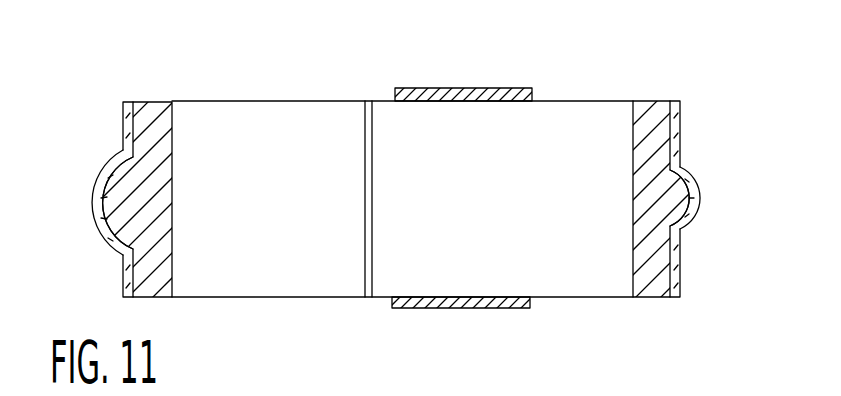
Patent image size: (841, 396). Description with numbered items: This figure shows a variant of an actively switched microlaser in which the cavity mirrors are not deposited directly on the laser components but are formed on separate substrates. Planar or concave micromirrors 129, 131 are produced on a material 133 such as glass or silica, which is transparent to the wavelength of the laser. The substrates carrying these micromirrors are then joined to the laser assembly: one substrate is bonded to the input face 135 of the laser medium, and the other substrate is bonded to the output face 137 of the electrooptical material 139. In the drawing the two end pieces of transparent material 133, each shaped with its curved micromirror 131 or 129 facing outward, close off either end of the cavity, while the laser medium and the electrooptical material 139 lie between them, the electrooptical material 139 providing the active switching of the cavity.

The concave micromirror 129 is at (665, 187).
The concave micromirror 131 is at (140, 175).
The transparent material 133 is at (140, 275).
The input face of the laser medium 135 is at (175, 122).
The output face of the electrooptical material 137 is at (633, 128).
The electrooptical material 139 is at (540, 280).